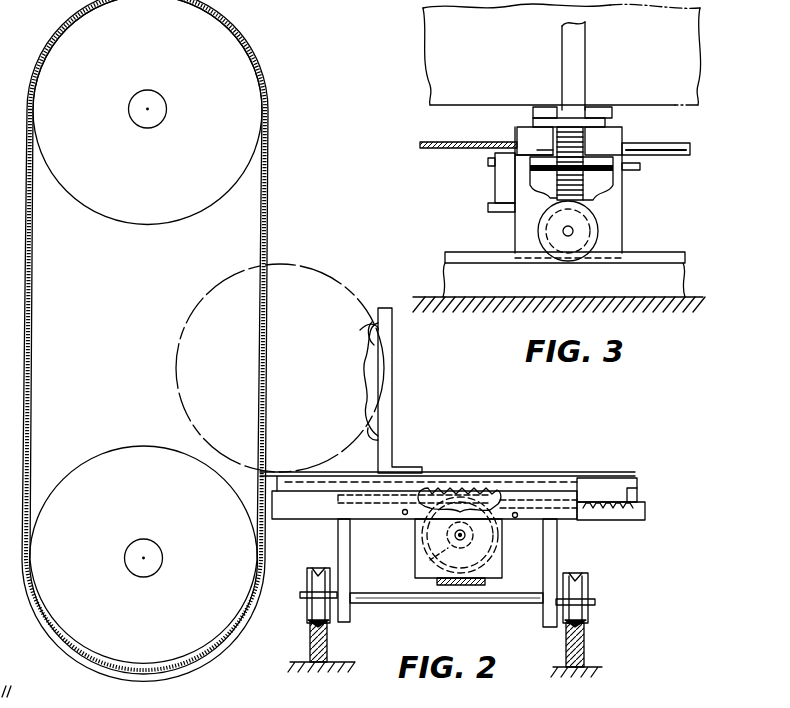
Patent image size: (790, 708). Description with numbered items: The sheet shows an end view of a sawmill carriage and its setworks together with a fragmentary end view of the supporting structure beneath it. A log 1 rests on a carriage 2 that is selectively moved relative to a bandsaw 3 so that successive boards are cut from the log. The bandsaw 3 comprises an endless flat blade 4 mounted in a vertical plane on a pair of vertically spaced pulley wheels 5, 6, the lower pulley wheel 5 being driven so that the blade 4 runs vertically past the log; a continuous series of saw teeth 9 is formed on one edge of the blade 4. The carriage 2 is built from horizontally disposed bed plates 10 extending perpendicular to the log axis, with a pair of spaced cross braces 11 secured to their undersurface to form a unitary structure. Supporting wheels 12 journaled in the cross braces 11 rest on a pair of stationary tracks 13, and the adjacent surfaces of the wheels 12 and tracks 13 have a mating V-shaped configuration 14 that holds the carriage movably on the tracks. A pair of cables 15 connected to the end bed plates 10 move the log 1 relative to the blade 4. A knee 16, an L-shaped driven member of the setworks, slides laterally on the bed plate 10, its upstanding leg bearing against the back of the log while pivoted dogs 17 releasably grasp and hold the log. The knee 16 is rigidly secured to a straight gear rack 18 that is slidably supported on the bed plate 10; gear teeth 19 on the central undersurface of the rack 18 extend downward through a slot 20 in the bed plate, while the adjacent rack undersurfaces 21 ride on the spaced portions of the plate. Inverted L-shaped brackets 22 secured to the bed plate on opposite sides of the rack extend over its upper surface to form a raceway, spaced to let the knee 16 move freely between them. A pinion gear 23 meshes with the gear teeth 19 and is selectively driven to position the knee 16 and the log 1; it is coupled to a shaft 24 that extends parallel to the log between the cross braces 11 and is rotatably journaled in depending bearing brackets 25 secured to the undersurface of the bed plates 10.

In FIG. 2, the log 1 is at (301, 273).
In FIG. 3, the log 1 is at (428, 35).
In FIG. 2, the carriage 2 is at (534, 460).
In FIG. 2, the bandsaw 3 is at (273, 211).
In FIG. 2, the endless flat blade 4 is at (260, 248).
In FIG. 2, the lower pulley wheel 5 is at (116, 449).
In FIG. 2, the upper pulley wheel 6 is at (138, 226).
In FIG. 2, the saw teeth 9 is at (29, 367).
In FIG. 2, the bed plates 10 is at (313, 514).
In FIG. 3, the bed plates 10 is at (517, 136).
In FIG. 2, the cross braces 11 is at (557, 563).
In FIG. 2, the supporting wheels 12 is at (306, 580).
In FIG. 3, the supporting wheels 12 is at (599, 229).
In FIG. 2, the stationary tracks 13 is at (328, 642).
In FIG. 3, the stationary tracks 13 is at (445, 276).
In FIG. 2, the V-shaped configuration 14 is at (312, 622).
In FIG. 3, the V-shaped configuration 14 is at (640, 256).
In FIG. 2, the cables 15 is at (405, 516).
In FIG. 3, the cables 15 is at (430, 142).
In FIG. 2, the knee 16 is at (392, 395).
In FIG. 3, the knee 16 is at (587, 56).
In FIG. 2, the dogs 17 is at (367, 363).
In FIG. 2, the gear rack 18 is at (613, 492).
In FIG. 3, the gear rack 18 is at (612, 120).
In FIG. 2, the gear teeth 19 is at (462, 498).
In FIG. 3, the gear teeth 19 is at (585, 138).
In FIG. 3, the slot 20 is at (537, 143).
In FIG. 2, the rack undersurfaces 21 is at (646, 505).
In FIG. 3, the rack undersurfaces 21 is at (535, 120).
In FIG. 3, the inverted L-shaped brackets 22 is at (540, 107).
In FIG. 2, the pinion gear 23 is at (430, 560).
In FIG. 3, the pinion gear 23 is at (560, 192).
In FIG. 2, the shaft 24 is at (465, 542).
In FIG. 3, the shaft 24 is at (640, 167).
In FIG. 2, the bearing brackets 25 is at (420, 571).
In FIG. 3, the bearing brackets 25 is at (497, 178).